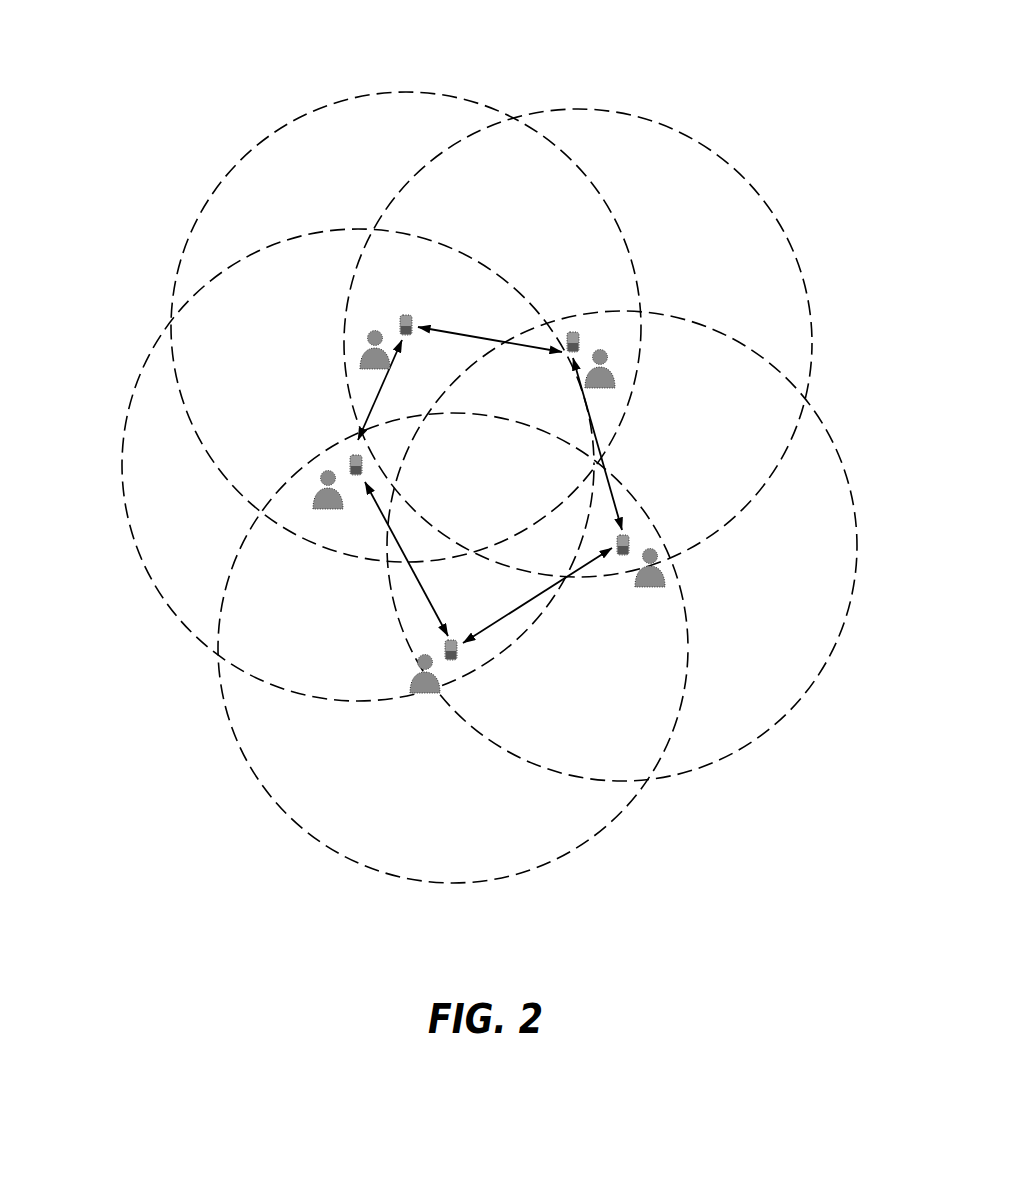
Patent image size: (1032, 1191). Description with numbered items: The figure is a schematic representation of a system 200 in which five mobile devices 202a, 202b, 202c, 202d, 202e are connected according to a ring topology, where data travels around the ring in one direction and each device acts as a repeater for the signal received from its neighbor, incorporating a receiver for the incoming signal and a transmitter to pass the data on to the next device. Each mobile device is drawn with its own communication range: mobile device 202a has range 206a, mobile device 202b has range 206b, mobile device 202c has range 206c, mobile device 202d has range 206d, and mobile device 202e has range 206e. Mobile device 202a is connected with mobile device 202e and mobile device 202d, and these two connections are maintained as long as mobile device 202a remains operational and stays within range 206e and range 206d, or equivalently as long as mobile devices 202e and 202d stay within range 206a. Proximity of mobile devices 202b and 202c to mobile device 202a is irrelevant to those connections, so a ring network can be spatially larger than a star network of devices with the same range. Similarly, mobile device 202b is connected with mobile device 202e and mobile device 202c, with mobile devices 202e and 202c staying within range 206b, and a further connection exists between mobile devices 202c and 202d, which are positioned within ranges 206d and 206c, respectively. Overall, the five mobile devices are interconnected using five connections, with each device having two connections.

The system 200 is at (740, 86).
The mobile device 202a is at (350, 468).
The mobile device 202b is at (578, 345).
The mobile device 202c is at (630, 545).
The mobile device 202d is at (447, 652).
The mobile device 202e is at (400, 328).
The range 206a is at (125, 502).
The range 206b is at (763, 197).
The range 206c is at (718, 757).
The range 206d is at (252, 767).
The range 206e is at (232, 168).